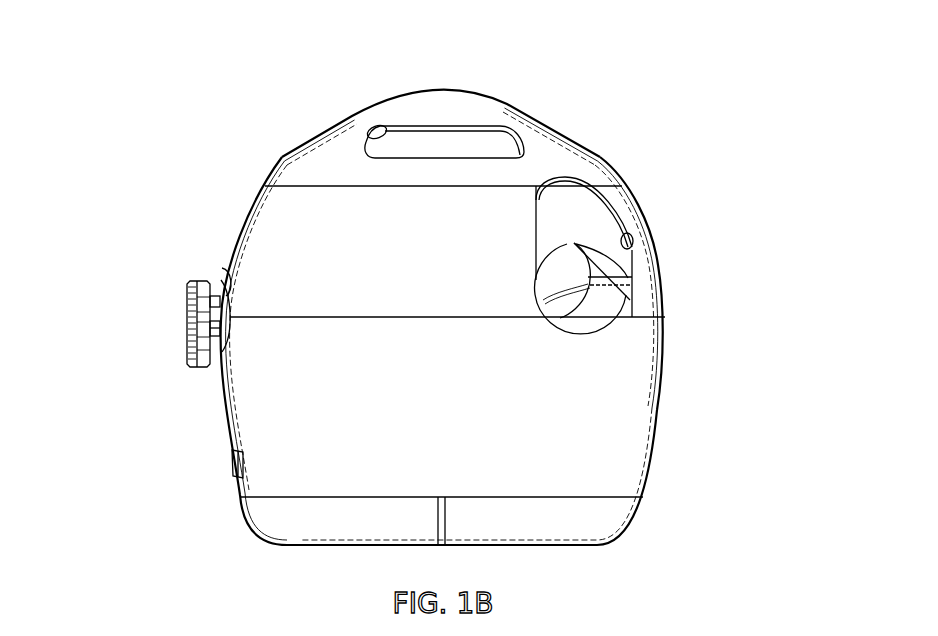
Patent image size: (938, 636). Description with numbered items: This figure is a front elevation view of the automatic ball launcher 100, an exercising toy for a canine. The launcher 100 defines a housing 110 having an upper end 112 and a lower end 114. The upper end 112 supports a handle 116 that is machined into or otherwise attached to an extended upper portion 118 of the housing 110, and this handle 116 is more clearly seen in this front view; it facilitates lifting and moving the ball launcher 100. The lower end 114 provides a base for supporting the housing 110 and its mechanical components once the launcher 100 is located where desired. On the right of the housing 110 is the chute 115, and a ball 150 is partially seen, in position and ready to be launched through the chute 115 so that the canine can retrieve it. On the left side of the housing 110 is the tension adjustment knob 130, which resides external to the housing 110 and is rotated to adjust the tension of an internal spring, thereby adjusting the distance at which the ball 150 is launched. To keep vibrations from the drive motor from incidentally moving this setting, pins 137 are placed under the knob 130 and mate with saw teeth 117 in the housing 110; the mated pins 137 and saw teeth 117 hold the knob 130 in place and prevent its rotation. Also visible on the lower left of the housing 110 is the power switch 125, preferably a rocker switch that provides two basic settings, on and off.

The automatic ball launcher 100 is at (820, 132).
The housing 110 is at (422, 433).
The upper end 112 is at (270, 205).
The lower end 114 is at (270, 520).
The chute 115 is at (630, 247).
The handle 116 is at (368, 138).
The saw teeth 117 is at (215, 328).
The extended upper portion 118 is at (490, 110).
The power switch 125 is at (232, 461).
The tension adjustment knob 130 is at (187, 325).
The pins 137 is at (222, 270).
The ball 150 is at (608, 309).